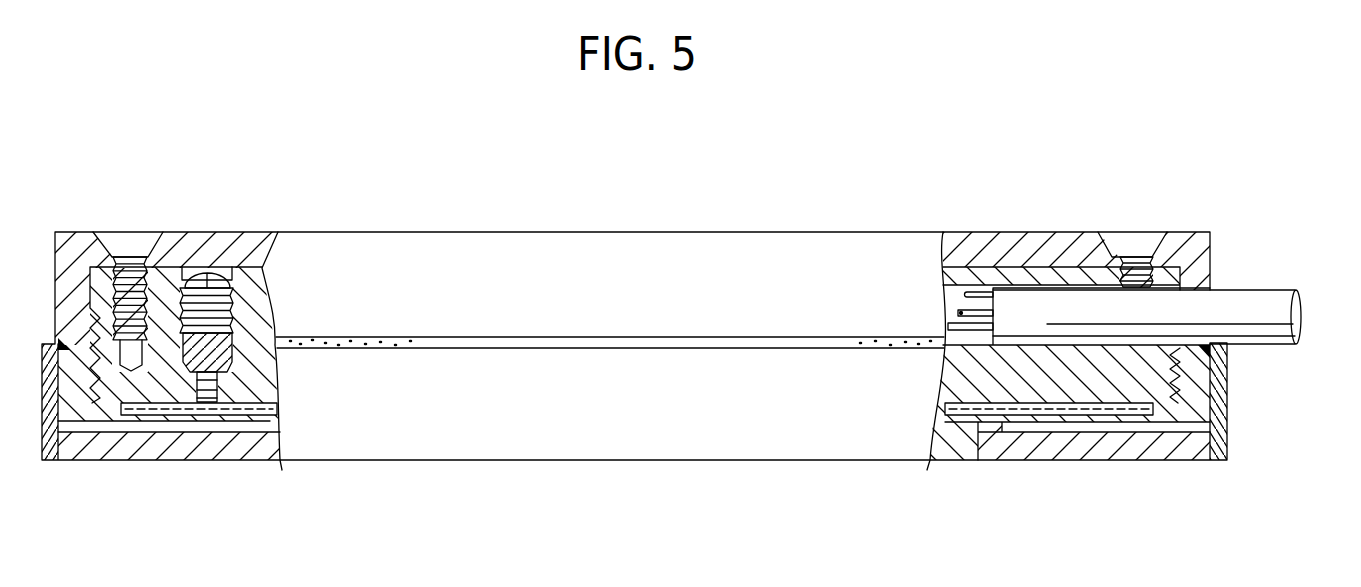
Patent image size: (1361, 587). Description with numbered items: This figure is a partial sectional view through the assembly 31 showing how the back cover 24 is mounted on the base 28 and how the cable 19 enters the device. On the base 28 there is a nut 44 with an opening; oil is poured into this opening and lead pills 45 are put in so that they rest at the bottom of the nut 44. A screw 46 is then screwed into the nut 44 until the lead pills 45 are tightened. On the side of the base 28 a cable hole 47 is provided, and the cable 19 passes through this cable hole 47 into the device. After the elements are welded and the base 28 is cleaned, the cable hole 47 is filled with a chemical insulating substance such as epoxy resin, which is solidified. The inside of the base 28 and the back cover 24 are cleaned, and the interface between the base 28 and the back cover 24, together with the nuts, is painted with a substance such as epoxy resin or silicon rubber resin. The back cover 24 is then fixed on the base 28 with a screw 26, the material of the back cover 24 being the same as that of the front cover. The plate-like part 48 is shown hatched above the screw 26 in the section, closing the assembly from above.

The cable 19 is at (1263, 322).
The back cover 24 is at (482, 253).
The screw 26 is at (113, 242).
The base 28 is at (256, 386).
The assembly 31 is at (1073, 172).
The nut 44 is at (232, 270).
The lead pills 45 is at (200, 360).
The screw 46 is at (279, 238).
The cable hole 47 is at (1212, 270).
The cover plate 48 is at (147, 262).